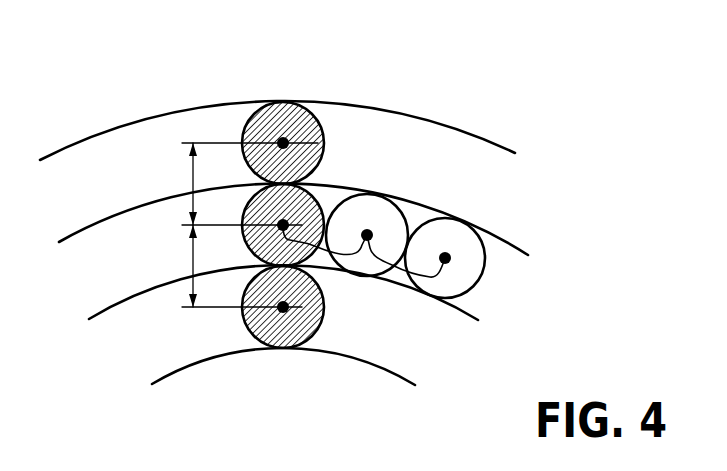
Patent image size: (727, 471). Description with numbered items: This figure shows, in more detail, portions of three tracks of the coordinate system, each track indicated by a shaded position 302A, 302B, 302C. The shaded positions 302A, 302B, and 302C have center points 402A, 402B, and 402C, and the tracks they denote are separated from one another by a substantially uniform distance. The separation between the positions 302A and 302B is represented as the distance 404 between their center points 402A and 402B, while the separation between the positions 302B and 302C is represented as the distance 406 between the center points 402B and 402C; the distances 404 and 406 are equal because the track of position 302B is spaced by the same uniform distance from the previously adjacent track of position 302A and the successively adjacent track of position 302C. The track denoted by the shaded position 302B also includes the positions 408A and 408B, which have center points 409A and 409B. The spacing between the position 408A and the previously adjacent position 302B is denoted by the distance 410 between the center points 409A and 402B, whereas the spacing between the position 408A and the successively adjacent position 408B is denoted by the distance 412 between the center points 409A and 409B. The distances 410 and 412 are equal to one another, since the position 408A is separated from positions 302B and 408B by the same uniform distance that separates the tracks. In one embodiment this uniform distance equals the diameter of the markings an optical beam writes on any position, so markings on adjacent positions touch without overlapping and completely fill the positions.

The shaded position 302A is at (323, 342).
The shaded position 302B is at (327, 200).
The shaded position 302C is at (320, 102).
The center point 402A is at (261, 341).
The center point 402B is at (330, 202).
The center point 402C is at (326, 143).
The distance 404 is at (193, 261).
The distance 406 is at (193, 175).
The position 408A is at (398, 208).
The position 408B is at (487, 250).
The center point 409A is at (372, 230).
The center point 409B is at (451, 258).
The distance 410 is at (318, 252).
The distance 412 is at (397, 270).